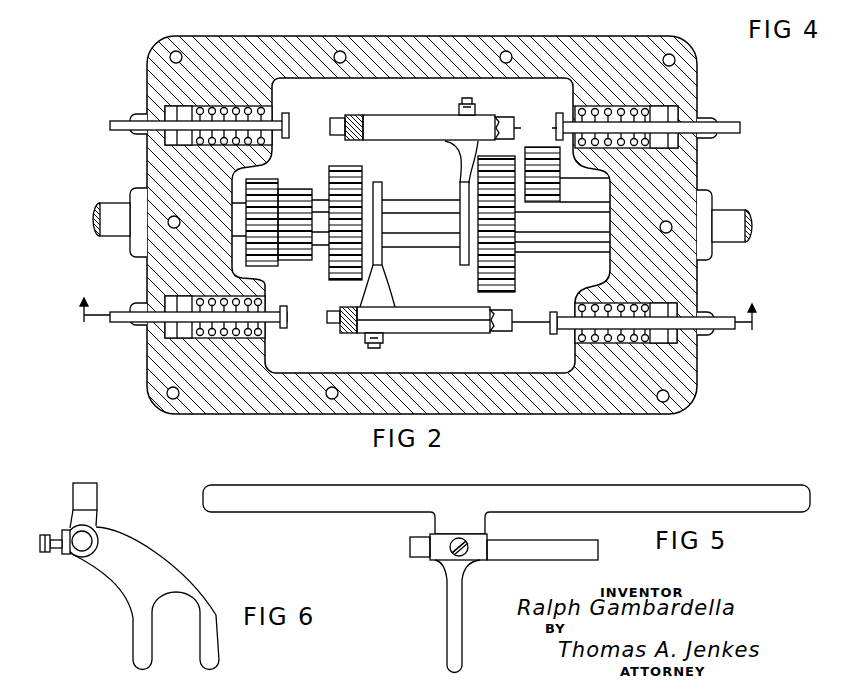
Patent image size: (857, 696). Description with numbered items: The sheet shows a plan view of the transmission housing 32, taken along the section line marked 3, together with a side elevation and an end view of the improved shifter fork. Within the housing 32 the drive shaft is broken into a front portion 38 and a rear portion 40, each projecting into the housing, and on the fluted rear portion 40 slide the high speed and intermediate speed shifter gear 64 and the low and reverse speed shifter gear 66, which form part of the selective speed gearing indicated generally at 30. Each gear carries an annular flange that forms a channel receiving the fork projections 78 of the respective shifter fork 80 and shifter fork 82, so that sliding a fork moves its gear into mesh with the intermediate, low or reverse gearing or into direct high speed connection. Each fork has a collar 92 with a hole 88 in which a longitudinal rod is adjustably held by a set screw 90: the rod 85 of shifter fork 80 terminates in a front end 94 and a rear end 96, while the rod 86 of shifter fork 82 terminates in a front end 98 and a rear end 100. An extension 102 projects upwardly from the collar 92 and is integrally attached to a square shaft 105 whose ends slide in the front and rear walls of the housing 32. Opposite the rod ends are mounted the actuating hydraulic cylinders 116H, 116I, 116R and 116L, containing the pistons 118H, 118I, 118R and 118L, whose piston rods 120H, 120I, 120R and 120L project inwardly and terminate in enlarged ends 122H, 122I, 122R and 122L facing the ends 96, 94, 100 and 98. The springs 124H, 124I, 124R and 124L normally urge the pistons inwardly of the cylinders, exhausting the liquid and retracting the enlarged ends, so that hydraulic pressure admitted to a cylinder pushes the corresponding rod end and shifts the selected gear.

In FIG. 2, the section line 3 is at (417, 325).
In FIG. 2, the transmission gear train 30 is at (448, 292).
In FIG. 2, the transmission housing 32 is at (643, 398).
In FIG. 2, the front portion of drive shaft 38 is at (118, 216).
In FIG. 2, the rear portion of drive shaft 40 is at (728, 226).
In FIG. 2, the high speed and intermediate speed shifter gear 64 is at (340, 270).
In FIG. 2, the low and reverse speed shifter gear 66 is at (514, 272).
In FIG. 2, the fork projections 78 is at (475, 178).
In FIG. 6, the fork projections 78 is at (210, 646).
In FIG. 5, the fork projections 78 is at (463, 626).
In FIG. 2, the shifter fork 80 is at (440, 334).
In FIG. 6, the shifter fork 80 is at (155, 558).
In FIG. 5, the shifter fork 80 is at (448, 560).
In FIG. 2, the shifter fork 82 is at (428, 141).
In FIG. 2, the rod 85 is at (508, 323).
In FIG. 6, the rod 85 is at (94, 529).
In FIG. 2, the rod 86 is at (510, 125).
In FIG. 6, the hole 88 is at (82, 553).
In FIG. 5, the set screw 90 is at (451, 546).
In FIG. 6, the collar 92 is at (97, 537).
In FIG. 5, the collar 92 is at (478, 552).
In FIG. 2, the front end of rod 94 is at (338, 322).
In FIG. 5, the front end of rod 94 is at (420, 550).
In FIG. 2, the rear end of rod 96 is at (507, 331).
In FIG. 6, the rear end of rod 96 is at (48, 550).
In FIG. 5, the rear end of rod 96 is at (598, 551).
In FIG. 2, the front end of rod 98 is at (340, 126).
In FIG. 2, the rear end of rod 100 is at (535, 130).
In FIG. 5, the extension 102 is at (472, 527).
In FIG. 5, the square shaft 105 is at (665, 494).
In FIG. 2, the actuating hydraulic cylinder 116R is at (176, 121).
In FIG. 2, the actuating hydraulic cylinder 116L is at (697, 110).
In FIG. 2, the actuating hydraulic cylinder 116I is at (172, 332).
In FIG. 2, the actuating hydraulic cylinder 116H is at (672, 347).
In FIG. 2, the piston 118R is at (188, 128).
In FIG. 2, the piston 118L is at (697, 144).
In FIG. 2, the piston 118I is at (178, 312).
In FIG. 2, the piston 118H is at (655, 317).
In FIG. 2, the piston rod 120R is at (228, 127).
In FIG. 2, the piston rod 120L is at (615, 127).
In FIG. 2, the piston rod 120I is at (210, 316).
In FIG. 2, the piston rod 120H is at (600, 345).
In FIG. 2, the enlarged end 122R is at (287, 124).
In FIG. 2, the enlarged end 122L is at (559, 120).
In FIG. 2, the enlarged end 122I is at (288, 328).
In FIG. 2, the enlarged end 122H is at (555, 337).
In FIG. 2, the spring 124R is at (240, 107).
In FIG. 2, the spring 124L is at (593, 110).
In FIG. 2, the spring 124I is at (243, 340).
In FIG. 2, the spring 124H is at (583, 345).